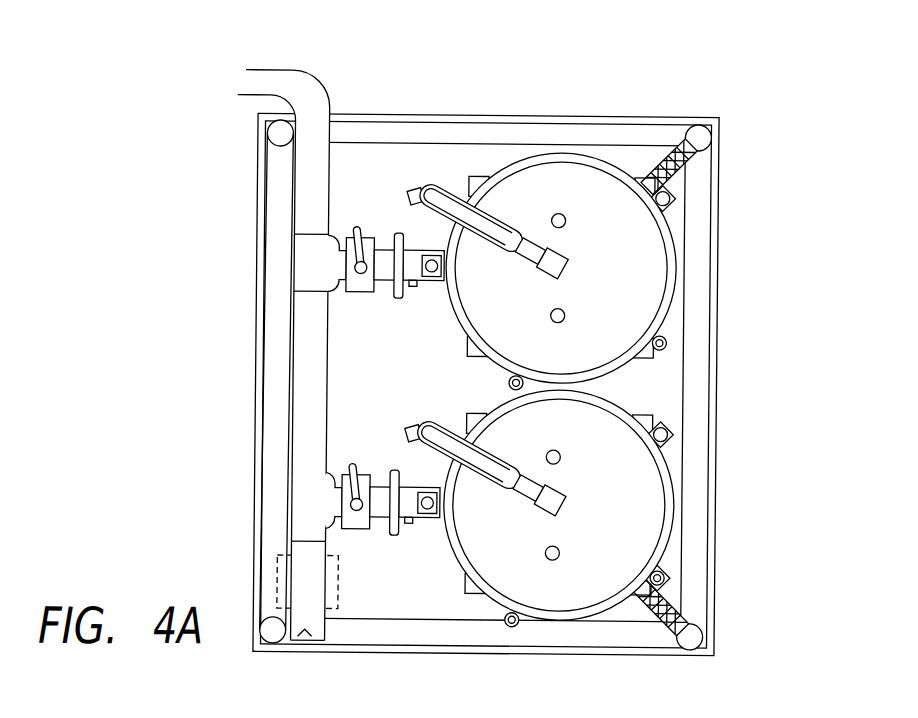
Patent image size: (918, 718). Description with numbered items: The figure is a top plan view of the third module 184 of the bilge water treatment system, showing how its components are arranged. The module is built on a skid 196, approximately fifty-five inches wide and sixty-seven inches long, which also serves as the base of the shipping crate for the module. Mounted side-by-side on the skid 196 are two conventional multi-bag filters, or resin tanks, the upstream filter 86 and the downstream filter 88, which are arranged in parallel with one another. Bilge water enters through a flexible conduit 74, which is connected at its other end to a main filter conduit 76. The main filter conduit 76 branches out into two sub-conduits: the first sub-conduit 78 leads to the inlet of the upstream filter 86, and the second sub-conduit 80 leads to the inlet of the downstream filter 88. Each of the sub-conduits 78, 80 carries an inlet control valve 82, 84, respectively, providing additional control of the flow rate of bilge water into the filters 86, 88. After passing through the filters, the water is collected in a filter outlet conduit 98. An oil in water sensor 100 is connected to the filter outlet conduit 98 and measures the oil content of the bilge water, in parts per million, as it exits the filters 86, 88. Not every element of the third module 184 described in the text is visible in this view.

The flexible conduit 74 is at (282, 82).
The main filter conduit 76 is at (308, 355).
The first sub-conduit 78 is at (385, 257).
The second sub-conduit 80 is at (378, 509).
The inlet control valve 82 is at (372, 241).
The inlet control valve 84 is at (356, 521).
The upstream filter 86 is at (636, 241).
The downstream filter 88 is at (619, 529).
The filter outlet conduit 98 is at (308, 620).
The oil in water sensor 100 is at (287, 570).
The third module 184 is at (758, 355).
The skid 196 is at (694, 471).